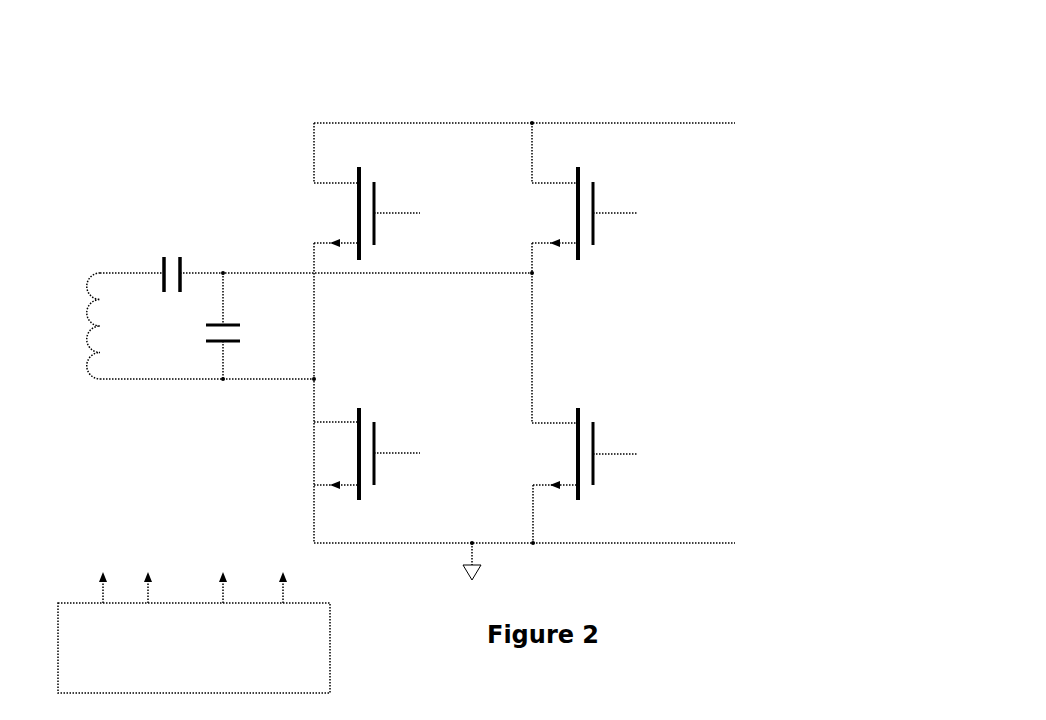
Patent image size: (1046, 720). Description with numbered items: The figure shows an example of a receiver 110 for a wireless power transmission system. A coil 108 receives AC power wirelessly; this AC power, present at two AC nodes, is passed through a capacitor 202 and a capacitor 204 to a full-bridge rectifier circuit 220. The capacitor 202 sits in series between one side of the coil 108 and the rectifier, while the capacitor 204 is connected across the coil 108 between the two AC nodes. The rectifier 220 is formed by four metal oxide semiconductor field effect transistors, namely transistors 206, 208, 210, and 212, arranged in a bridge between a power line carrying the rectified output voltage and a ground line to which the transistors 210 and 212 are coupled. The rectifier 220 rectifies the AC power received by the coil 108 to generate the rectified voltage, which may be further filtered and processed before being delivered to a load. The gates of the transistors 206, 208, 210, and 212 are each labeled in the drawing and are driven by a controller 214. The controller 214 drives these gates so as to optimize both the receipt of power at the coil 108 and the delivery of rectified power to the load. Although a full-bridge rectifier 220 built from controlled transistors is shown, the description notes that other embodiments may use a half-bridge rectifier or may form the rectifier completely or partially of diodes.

The receiver 110 is at (153, 83).
The coil 108 is at (80, 312).
The capacitor 202 is at (164, 260).
The capacitor 204 is at (208, 332).
The MOSFET 206 is at (388, 183).
The MOSFET 208 is at (578, 170).
The MOSFET 210 is at (374, 422).
The MOSFET 212 is at (578, 410).
The controller 214 is at (194, 618).
The full-bridge rectifier circuit 220 is at (512, 335).